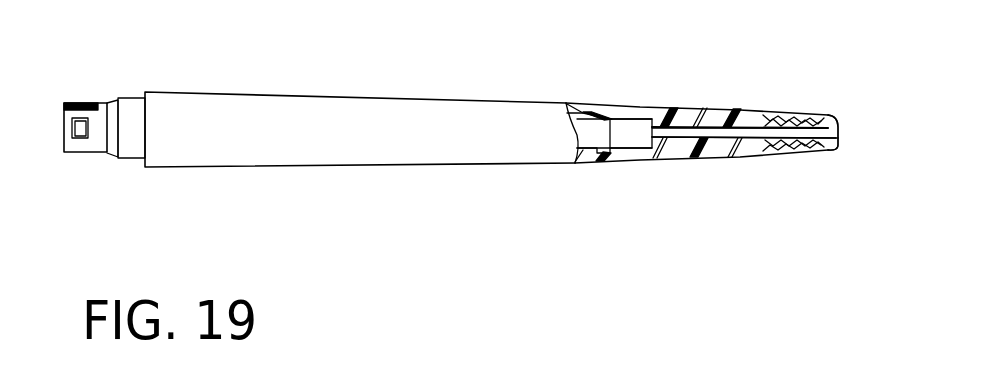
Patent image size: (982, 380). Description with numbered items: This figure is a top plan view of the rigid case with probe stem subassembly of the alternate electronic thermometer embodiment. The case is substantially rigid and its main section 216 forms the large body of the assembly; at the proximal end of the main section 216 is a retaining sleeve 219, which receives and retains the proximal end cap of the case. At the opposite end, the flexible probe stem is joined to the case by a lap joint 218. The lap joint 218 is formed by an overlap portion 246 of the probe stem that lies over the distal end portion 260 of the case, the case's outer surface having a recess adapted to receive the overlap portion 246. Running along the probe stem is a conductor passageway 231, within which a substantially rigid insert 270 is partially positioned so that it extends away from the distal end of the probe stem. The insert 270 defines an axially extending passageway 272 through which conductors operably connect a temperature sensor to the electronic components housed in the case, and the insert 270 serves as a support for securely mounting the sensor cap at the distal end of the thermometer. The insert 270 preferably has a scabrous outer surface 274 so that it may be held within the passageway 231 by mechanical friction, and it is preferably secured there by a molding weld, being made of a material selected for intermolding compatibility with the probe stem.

The main section 216 is at (258, 153).
The lap joint 218 is at (718, 108).
The retaining sleeve 219 is at (98, 148).
The conductor passageway 231 is at (697, 138).
The overlap portion 246 is at (645, 106).
The distal end portion 260 is at (587, 131).
The rigid insert 270 is at (829, 152).
The axially extending passageway 272 is at (822, 125).
The scabrous outer surface 274 is at (782, 157).